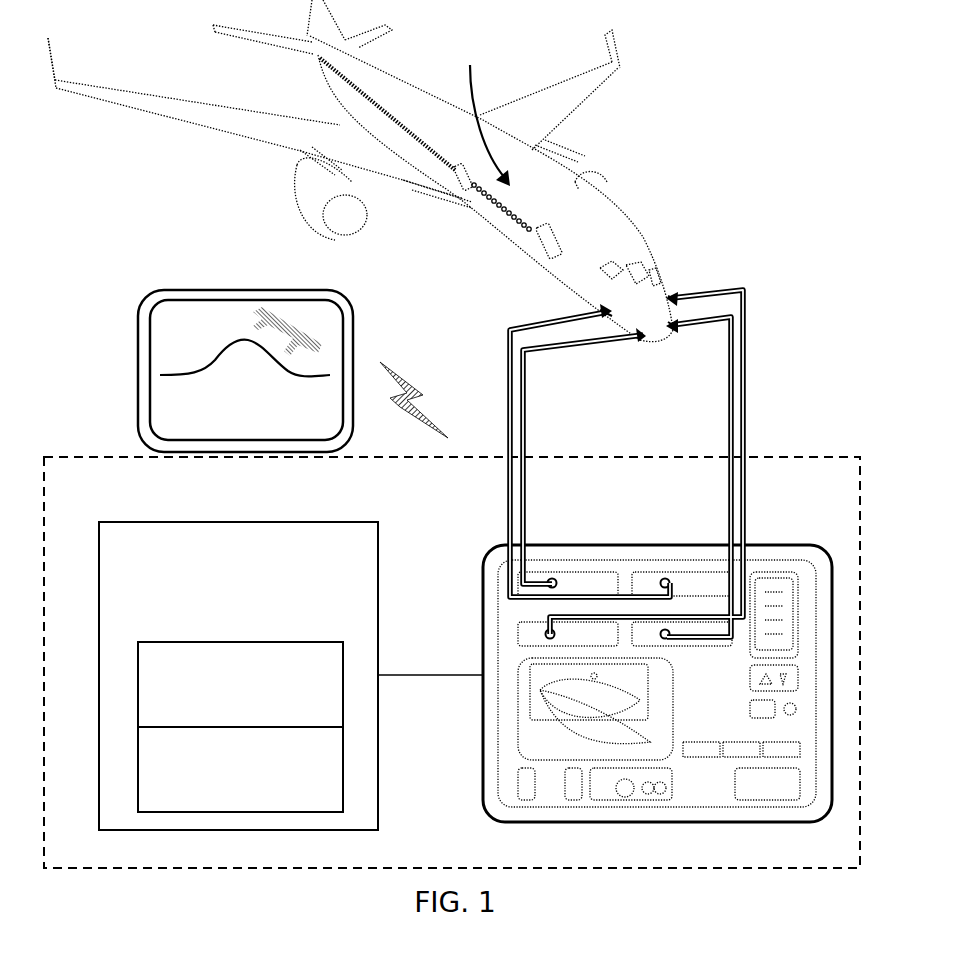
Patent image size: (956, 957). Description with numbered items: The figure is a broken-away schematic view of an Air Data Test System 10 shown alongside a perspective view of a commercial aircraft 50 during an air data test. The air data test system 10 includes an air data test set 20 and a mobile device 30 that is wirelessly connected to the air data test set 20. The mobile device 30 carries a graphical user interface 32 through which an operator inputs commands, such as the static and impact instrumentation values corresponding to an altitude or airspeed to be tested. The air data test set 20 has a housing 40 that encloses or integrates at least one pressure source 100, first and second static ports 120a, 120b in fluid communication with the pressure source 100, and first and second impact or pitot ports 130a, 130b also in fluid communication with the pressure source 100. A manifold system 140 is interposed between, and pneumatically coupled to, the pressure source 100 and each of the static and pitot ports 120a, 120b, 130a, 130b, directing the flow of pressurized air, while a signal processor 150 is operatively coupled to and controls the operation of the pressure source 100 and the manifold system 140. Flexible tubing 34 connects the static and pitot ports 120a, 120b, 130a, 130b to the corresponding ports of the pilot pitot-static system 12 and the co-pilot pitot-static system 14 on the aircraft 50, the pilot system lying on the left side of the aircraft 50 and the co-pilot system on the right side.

The air data test system 10 is at (640, 132).
The aircraft 50 is at (489, 112).
The pilot pitot-static system 12 is at (600, 312).
The co-pilot pitot-static system 14 is at (672, 325).
The air data test set 20 is at (768, 447).
The mobile device 30 is at (244, 320).
The graphical user interface 32 is at (302, 330).
The flexible tubing 34 is at (518, 385).
The housing 40 is at (616, 640).
The pressure source 100 is at (170, 642).
The manifold system 140 is at (176, 727).
The signal processor 150 is at (165, 520).
The first static port 120a is at (662, 632).
The second static port 120b is at (668, 582).
The first impact port 130a is at (552, 634).
The second impact port 130b is at (552, 583).